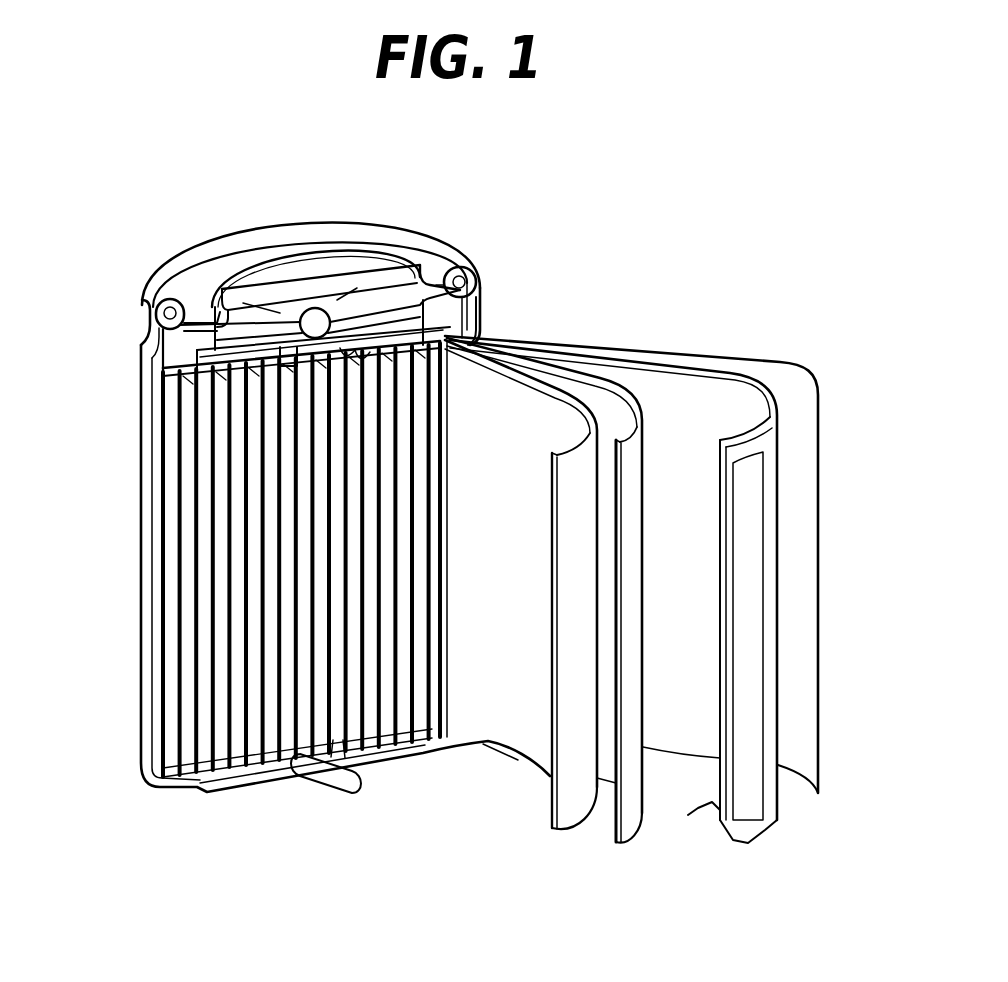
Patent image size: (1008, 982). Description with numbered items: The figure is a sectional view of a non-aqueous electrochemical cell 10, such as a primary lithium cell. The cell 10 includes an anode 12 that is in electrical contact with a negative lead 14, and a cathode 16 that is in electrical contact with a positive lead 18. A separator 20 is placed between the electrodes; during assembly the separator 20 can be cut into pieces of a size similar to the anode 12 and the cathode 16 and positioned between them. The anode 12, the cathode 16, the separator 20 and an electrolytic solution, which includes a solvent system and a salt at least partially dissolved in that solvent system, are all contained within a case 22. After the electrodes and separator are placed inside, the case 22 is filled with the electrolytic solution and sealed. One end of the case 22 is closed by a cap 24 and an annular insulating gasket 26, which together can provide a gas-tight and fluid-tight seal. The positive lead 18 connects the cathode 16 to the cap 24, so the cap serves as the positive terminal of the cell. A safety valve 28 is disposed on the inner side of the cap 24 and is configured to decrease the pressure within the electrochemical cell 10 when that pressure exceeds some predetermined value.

The electrochemical cell 10 is at (694, 230).
The anode 12 is at (773, 778).
The negative lead 14 is at (746, 821).
The cathode 16 is at (576, 818).
The positive lead 18 is at (337, 337).
The separator 20 is at (642, 450).
The case 22 is at (159, 790).
The cap 24 is at (302, 264).
The annular insulating gasket 26 is at (161, 311).
The safety valve 28 is at (379, 301).